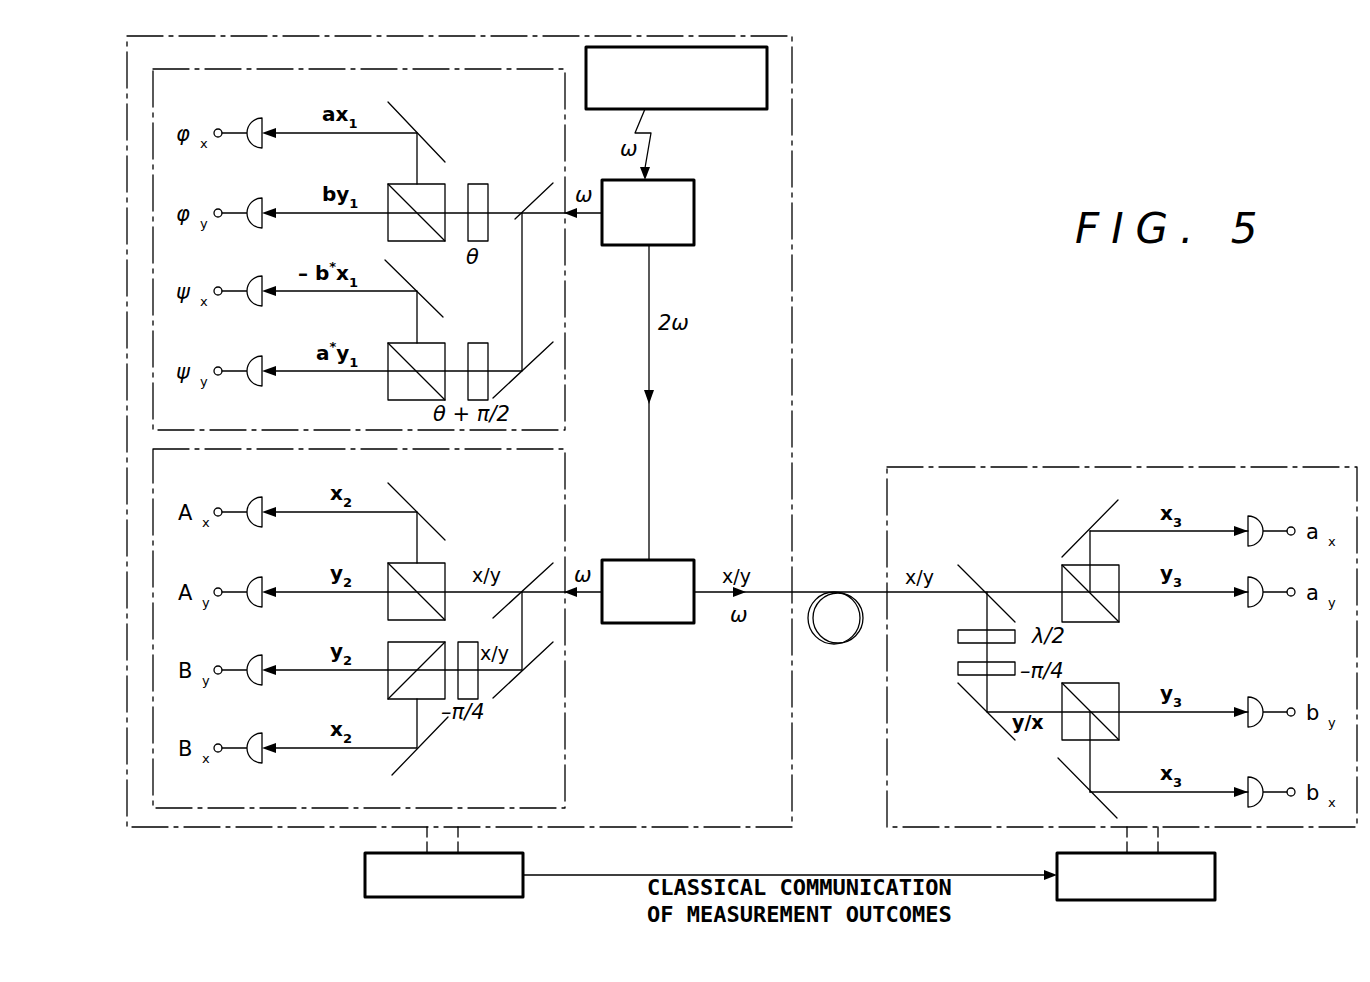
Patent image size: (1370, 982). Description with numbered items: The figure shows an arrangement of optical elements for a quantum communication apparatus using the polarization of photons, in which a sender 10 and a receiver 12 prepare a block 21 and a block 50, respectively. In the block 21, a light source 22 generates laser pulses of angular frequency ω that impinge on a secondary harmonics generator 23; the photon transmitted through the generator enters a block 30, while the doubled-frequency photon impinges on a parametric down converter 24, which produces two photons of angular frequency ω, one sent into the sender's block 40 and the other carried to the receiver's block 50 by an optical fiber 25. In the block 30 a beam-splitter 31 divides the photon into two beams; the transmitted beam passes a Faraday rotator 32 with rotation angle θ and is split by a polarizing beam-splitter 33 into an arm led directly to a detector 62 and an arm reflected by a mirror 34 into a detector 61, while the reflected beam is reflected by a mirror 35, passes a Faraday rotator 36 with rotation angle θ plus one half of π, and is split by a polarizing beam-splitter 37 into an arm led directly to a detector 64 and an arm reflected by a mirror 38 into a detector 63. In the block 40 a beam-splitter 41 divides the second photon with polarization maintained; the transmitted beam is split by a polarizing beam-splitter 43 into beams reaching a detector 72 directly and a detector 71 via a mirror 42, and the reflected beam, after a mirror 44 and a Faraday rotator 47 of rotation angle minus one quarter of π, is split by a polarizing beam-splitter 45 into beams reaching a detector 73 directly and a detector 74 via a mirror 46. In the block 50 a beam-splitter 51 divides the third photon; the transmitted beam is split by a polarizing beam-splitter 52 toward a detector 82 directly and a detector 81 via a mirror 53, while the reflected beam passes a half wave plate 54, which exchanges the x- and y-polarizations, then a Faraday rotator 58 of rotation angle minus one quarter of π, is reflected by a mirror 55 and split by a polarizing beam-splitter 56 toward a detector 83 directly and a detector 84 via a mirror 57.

The sender 10 is at (440, 897).
The receiver 12 is at (1215, 890).
The block 21 is at (187, 827).
The light source 22 is at (710, 109).
The secondary harmonics generator 23 is at (694, 197).
The parametric down converter 24 is at (677, 560).
The optical fiber 25 is at (834, 593).
The block 30 is at (392, 69).
The beam-splitter 31 is at (531, 196).
The Faraday rotator 32 is at (478, 184).
The polarizing beam-splitter 33 is at (398, 184).
The mirror 34 is at (406, 113).
The mirror 35 is at (536, 362).
The Faraday rotator 36 is at (478, 343).
The polarizing beam-splitter 37 is at (398, 343).
The mirror 38 is at (422, 300).
The block 40 is at (565, 793).
The beam-splitter 41 is at (531, 573).
The mirror 42 is at (406, 495).
The polarizing beam-splitter 43 is at (448, 562).
The mirror 44 is at (552, 648).
The polarizing beam-splitter 45 is at (400, 699).
The mirror 46 is at (430, 737).
The Faraday rotator 47 is at (456, 643).
The block 50 is at (1232, 827).
The beam-splitter 51 is at (976, 573).
The polarizing beam-splitter 52 is at (1055, 578).
The mirror 53 is at (1108, 515).
The half wave plate 54 is at (958, 637).
The mirror 55 is at (962, 690).
The polarizing beam-splitter 56 is at (1080, 683).
The mirror 57 is at (1060, 766).
The Faraday rotator 58 is at (958, 672).
The detector 61 is at (259, 124).
The detector 62 is at (259, 204).
The detector 63 is at (259, 281).
The detector 64 is at (259, 361).
The detector 71 is at (259, 502).
The detector 72 is at (259, 582).
The detector 73 is at (259, 660).
The detector 74 is at (259, 738).
The detector 81 is at (1248, 518).
The detector 82 is at (1248, 595).
The detector 83 is at (1248, 697).
The detector 84 is at (1248, 778).